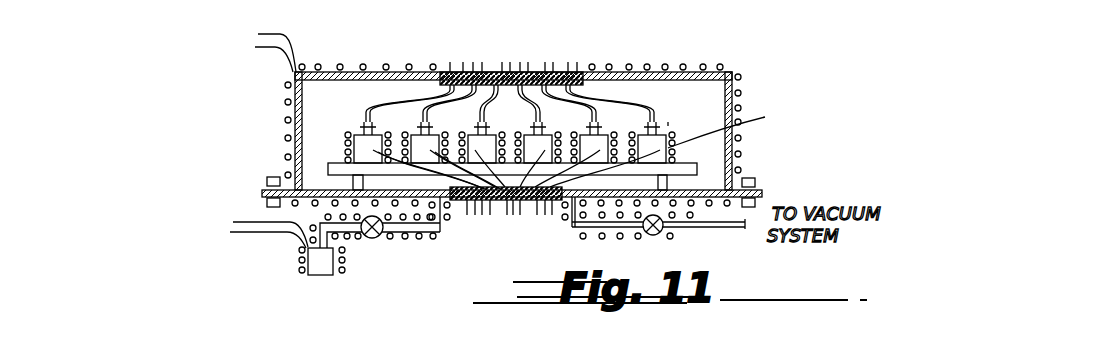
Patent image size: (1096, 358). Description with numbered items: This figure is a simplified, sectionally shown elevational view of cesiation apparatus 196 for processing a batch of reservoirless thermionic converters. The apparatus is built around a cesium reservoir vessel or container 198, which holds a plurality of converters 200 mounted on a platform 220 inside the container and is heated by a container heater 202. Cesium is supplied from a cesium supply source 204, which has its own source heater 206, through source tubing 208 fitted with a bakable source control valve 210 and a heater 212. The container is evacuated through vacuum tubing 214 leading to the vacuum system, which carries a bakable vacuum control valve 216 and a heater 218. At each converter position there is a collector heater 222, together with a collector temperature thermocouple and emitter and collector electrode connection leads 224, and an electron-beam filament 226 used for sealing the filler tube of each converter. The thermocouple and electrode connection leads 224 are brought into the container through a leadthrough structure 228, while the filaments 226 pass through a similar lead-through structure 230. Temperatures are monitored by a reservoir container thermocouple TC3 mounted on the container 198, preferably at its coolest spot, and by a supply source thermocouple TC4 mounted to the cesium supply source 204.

The cesiation apparatus 196 is at (763, 45).
The cesium reservoir vessel 198 is at (737, 100).
The converters 200 is at (362, 121).
The container heater 202 is at (286, 120).
The cesium supply source 204 is at (306, 258).
The source heater 206 is at (347, 262).
The source tubing 208 is at (441, 232).
The bakable source control valve 210 is at (370, 238).
The heater 212 is at (424, 240).
The vacuum tubing 214 is at (732, 229).
The bakable vacuum control valve 216 is at (655, 236).
The heater 218 is at (581, 232).
The platform 220 is at (697, 172).
The collector heater 222 is at (345, 150).
The thermocouple and electrode connection leads 224 is at (740, 126).
The electron-beam filament 226 is at (668, 126).
The leadthrough structure 228 is at (461, 204).
The lead-through structure 230 is at (465, 70).
The reservoir container thermocouple TC3 is at (292, 78).
The supply source thermocouple TC4 is at (302, 244).